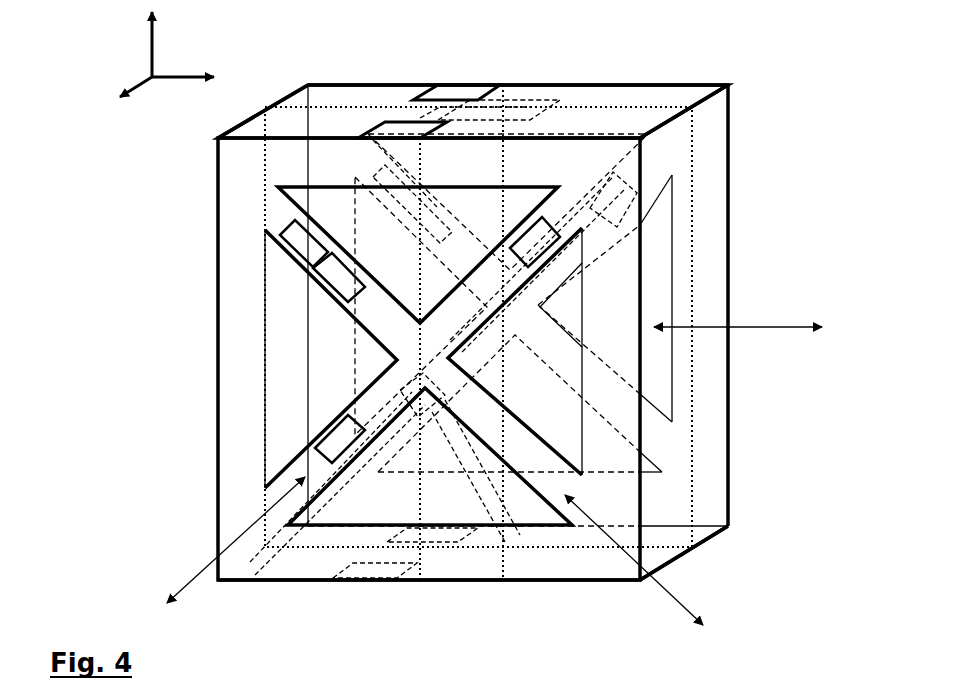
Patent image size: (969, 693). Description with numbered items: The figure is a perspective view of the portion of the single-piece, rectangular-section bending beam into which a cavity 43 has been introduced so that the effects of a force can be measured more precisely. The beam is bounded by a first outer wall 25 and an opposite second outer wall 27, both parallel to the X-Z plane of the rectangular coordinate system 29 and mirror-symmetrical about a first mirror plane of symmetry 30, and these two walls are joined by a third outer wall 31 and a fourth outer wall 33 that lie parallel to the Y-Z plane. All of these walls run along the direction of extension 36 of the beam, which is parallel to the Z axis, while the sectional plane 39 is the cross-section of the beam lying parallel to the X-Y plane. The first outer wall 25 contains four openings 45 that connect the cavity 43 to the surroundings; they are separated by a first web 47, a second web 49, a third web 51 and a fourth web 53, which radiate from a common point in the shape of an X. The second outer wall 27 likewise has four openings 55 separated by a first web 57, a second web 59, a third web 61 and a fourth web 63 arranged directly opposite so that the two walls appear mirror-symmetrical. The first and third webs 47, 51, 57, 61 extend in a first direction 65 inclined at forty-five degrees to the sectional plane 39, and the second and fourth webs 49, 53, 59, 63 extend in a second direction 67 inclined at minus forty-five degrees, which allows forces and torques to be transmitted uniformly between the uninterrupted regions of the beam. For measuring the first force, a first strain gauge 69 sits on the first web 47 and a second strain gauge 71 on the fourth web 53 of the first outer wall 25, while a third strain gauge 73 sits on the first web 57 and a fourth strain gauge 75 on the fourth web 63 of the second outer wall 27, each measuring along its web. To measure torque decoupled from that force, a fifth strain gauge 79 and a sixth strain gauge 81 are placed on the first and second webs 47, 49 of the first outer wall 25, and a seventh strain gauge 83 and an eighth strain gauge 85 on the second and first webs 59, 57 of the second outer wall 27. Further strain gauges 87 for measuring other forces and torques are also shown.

The first outer wall 25 is at (627, 334).
The second outer wall 27 is at (716, 284).
The rectangular coordinate system 29 is at (140, 120).
The first mirror plane of symmetry 30 is at (692, 402).
The third outer wall 31 is at (352, 97).
The fourth outer wall 33 is at (570, 565).
The direction of extension 36 is at (783, 327).
The sectional plane 39 is at (498, 537).
The cavity 43 is at (664, 157).
The openings 45 is at (405, 269).
The first web 47 is at (375, 316).
The second web 49 is at (533, 265).
The third web 51 is at (489, 471).
The fourth web 53 is at (290, 560).
The openings 55 is at (502, 224).
The first web 57 is at (474, 262).
The second web 59 is at (560, 272).
The third web 61 is at (565, 340).
The fourth web 63 is at (337, 483).
The first direction 65 is at (690, 608).
The second direction 67 is at (218, 580).
The first strain gauge 69 is at (347, 285).
The second strain gauge 71 is at (335, 440).
The third strain gauge 73 is at (423, 233).
The fourth strain gauge 75 is at (430, 400).
The fifth strain gauge 79 is at (295, 230).
The sixth strain gauge 81 is at (537, 245).
The seventh strain gauge 83 is at (613, 202).
The eighth strain gauge 85 is at (383, 180).
The further strain gauges 87 is at (538, 87).